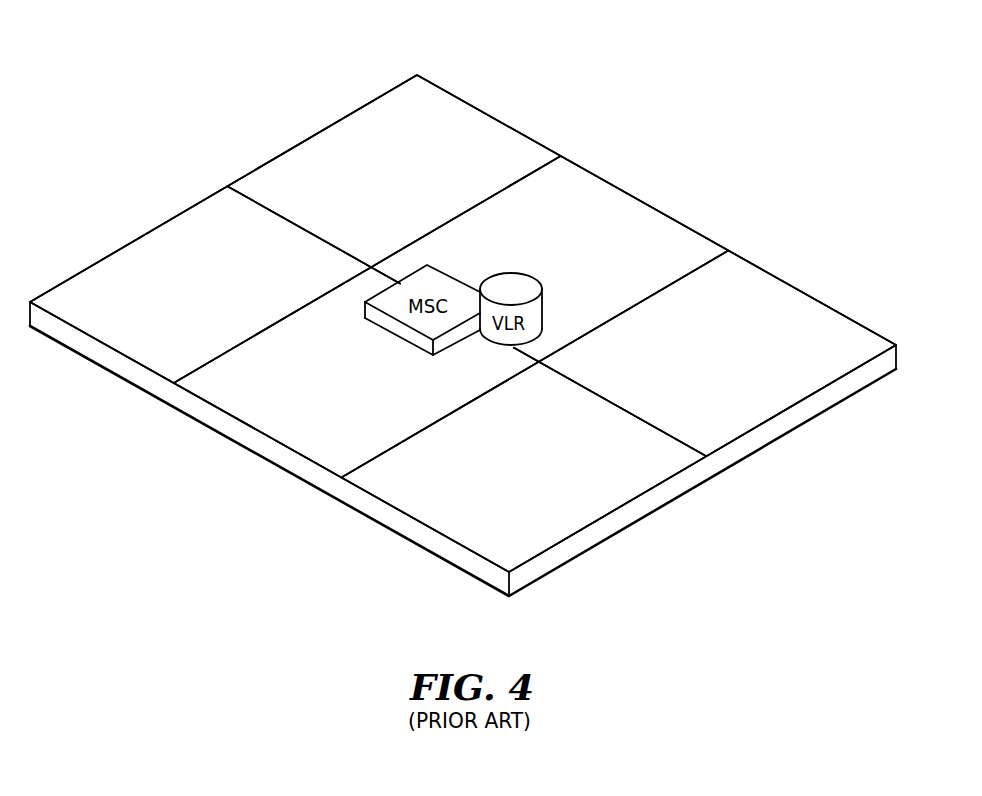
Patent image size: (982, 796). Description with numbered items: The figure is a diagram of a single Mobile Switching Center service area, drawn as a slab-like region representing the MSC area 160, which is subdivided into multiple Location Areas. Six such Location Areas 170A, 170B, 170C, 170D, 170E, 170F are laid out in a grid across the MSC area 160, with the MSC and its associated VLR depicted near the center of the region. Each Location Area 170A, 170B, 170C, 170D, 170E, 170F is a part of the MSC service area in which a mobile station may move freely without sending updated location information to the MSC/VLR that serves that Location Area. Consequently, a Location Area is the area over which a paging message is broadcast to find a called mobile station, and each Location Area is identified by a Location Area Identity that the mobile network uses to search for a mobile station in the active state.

The MSC area 160 is at (233, 120).
The Location Area 170A is at (467, 136).
The Location Area 170B is at (619, 223).
The Location Area 170C is at (814, 347).
The Location Area 170D is at (447, 521).
The Location Area 170E is at (265, 411).
The Location Area 170F is at (108, 322).